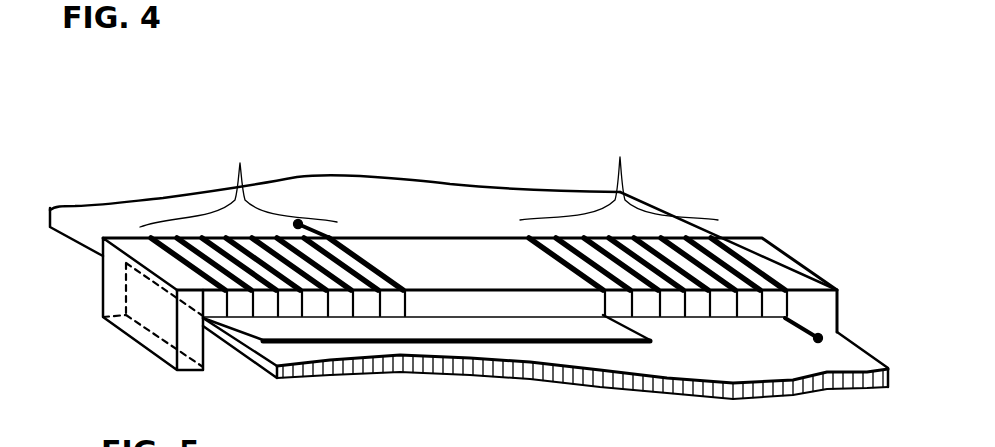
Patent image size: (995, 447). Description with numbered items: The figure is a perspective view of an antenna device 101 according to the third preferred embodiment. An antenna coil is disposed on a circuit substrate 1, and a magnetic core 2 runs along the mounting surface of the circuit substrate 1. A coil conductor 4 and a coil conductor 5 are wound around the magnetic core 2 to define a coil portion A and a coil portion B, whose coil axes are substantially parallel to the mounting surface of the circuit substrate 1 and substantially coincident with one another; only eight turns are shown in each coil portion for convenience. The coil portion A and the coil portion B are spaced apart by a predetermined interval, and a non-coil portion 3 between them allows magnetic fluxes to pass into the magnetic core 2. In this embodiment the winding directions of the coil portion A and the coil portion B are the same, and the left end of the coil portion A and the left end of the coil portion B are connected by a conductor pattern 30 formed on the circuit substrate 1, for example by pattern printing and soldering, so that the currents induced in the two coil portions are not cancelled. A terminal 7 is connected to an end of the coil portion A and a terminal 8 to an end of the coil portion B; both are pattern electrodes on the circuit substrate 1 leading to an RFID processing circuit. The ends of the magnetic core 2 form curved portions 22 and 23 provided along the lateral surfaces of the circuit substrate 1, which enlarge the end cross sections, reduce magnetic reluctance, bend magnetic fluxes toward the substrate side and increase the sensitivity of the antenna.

The antenna device 101 is at (92, 65).
The circuit substrate 1 is at (460, 212).
The magnetic core 2 is at (393, 308).
The non-coil portion 3 is at (447, 259).
The coil conductor 4 is at (327, 308).
The coil conductor 5 is at (733, 305).
The terminal 7 is at (295, 223).
The terminal 8 is at (816, 338).
The curved portion 22 is at (120, 303).
The curved portion 23 is at (817, 267).
The conductor pattern 30 is at (600, 343).
The coil portion A is at (238, 179).
The coil portion B is at (619, 176).